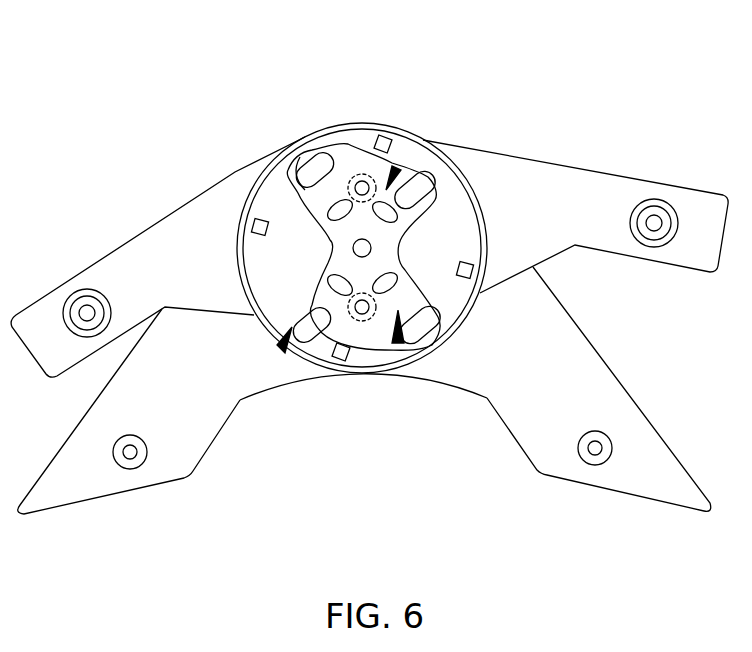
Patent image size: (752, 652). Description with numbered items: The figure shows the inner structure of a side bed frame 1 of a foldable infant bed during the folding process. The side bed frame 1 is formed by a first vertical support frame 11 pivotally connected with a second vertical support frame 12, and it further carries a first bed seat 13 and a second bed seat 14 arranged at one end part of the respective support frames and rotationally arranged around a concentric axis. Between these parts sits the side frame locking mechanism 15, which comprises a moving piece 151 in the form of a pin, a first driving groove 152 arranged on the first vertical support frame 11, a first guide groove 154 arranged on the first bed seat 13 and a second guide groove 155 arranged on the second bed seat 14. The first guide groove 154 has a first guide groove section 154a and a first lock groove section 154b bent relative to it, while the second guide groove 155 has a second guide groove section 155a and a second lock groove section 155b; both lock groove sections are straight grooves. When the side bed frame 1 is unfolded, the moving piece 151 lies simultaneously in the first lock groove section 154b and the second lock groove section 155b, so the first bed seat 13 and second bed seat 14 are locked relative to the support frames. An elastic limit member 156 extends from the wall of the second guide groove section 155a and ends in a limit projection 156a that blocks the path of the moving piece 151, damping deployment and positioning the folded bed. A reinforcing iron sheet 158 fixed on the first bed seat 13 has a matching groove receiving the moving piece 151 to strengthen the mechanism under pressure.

The side bed frame 1 is at (365, 377).
The first vertical support frame 11 is at (73, 482).
The second vertical support frame 12 is at (565, 373).
The first bed seat 13 is at (148, 258).
The second bed seat 14 is at (550, 197).
The side frame locking mechanism 15 is at (359, 158).
The moving piece 151 is at (357, 177).
The first driving groove 152 is at (383, 142).
The first guide groove 154 is at (380, 190).
The first guide groove section 154a is at (398, 197).
The first lock groove section 154b is at (310, 163).
The second guide groove 155 is at (292, 328).
The second guide groove section 155a is at (341, 345).
The second lock groove section 155b is at (312, 322).
The elastic limit member 156 is at (398, 332).
The limit projection 156a is at (428, 320).
The reinforcing iron sheet 158 is at (300, 157).